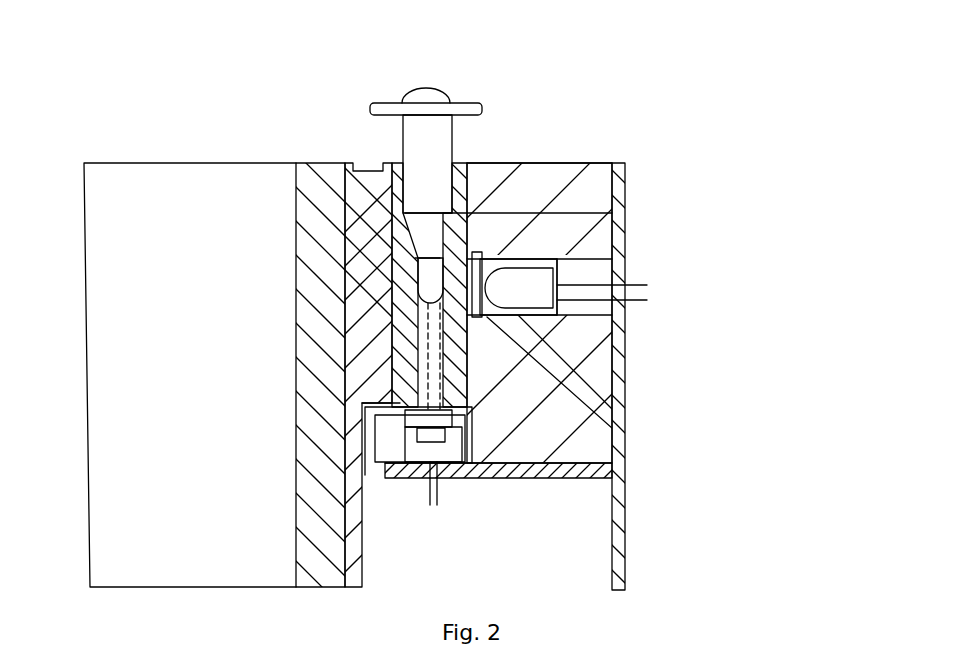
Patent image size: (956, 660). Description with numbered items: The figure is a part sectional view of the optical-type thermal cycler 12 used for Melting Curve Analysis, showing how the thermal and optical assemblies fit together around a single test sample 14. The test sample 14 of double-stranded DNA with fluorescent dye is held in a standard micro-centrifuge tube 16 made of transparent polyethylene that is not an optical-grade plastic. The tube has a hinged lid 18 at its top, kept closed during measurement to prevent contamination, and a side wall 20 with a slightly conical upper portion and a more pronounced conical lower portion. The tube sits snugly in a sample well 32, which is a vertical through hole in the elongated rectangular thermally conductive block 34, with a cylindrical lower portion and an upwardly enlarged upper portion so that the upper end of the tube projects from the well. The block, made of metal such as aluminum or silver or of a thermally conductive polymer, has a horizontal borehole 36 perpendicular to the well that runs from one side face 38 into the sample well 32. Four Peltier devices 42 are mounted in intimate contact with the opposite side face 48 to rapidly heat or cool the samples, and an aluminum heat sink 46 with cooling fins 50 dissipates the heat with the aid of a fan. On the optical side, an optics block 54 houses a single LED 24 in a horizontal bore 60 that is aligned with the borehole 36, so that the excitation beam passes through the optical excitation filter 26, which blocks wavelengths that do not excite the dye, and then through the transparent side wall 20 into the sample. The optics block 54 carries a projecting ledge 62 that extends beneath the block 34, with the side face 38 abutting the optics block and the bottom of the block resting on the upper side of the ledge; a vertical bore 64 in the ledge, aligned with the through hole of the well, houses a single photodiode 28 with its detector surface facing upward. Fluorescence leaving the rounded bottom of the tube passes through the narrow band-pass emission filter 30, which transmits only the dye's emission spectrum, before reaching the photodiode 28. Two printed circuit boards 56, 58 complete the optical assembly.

The optical-type thermal cycler 12 is at (232, 130).
The test sample 14 is at (319, 359).
The micro-centrifuge tube 16 is at (479, 277).
The hinged lid 18 is at (437, 97).
The side wall 20 is at (440, 196).
The LED 24 is at (537, 288).
The optical excitation filter 26 is at (497, 317).
The photodiode 28 is at (432, 447).
The narrow band-pass emission filter 30 is at (470, 445).
The sample well 32 is at (612, 213).
The thermally conductive block 34 is at (286, 284).
The horizontal borehole 36 is at (475, 317).
The side face 38 is at (569, 174).
The Peltier device 42 is at (355, 163).
The aluminum heat sink 46 is at (333, 553).
The side face 48 is at (392, 355).
The cooling fins 50 is at (193, 565).
The optics block 54 is at (555, 284).
The printed circuit board 56 is at (615, 565).
The printed circuit board 58 is at (580, 466).
The horizontal bore 60 is at (584, 346).
The projecting ledge 62 is at (454, 483).
The vertical bore 64 is at (440, 447).